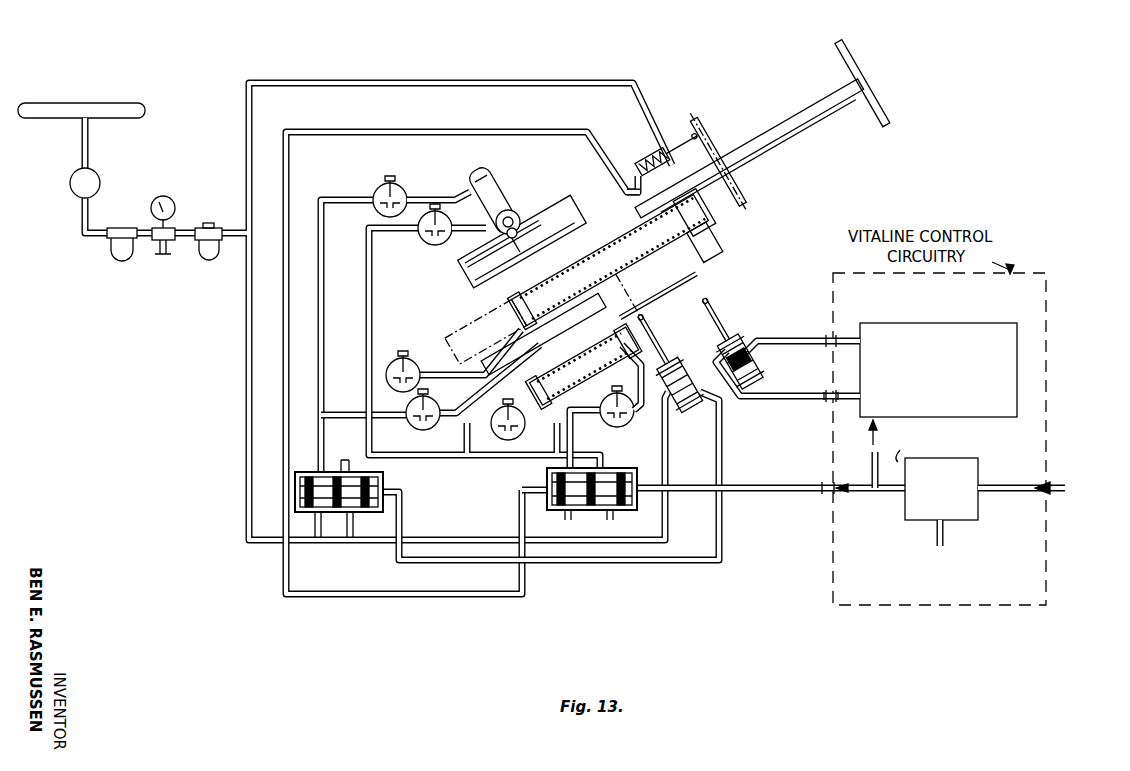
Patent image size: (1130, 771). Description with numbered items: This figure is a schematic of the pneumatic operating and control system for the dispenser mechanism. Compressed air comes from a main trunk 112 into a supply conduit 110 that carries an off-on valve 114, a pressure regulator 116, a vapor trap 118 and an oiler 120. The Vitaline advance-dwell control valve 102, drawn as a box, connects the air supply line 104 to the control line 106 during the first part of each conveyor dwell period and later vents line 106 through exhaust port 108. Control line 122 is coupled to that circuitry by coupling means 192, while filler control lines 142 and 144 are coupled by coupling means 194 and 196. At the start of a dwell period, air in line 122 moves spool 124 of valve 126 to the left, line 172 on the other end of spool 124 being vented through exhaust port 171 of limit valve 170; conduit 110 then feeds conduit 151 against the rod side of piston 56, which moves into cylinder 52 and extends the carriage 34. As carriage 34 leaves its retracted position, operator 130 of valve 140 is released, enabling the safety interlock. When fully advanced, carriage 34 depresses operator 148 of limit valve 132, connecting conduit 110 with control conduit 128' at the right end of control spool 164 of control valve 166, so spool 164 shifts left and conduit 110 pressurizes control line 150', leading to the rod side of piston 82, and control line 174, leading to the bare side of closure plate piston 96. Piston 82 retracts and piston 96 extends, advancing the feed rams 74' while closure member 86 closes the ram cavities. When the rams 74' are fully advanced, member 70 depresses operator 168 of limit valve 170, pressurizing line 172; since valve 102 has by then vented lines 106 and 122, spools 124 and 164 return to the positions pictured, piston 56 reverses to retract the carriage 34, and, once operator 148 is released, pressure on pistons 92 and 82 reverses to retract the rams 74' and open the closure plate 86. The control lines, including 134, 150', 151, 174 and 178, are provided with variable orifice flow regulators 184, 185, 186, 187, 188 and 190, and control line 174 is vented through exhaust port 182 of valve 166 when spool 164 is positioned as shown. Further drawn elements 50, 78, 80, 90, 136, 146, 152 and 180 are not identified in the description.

The carriage 34 is at (710, 276).
The cylinder 50 is at (560, 410).
The cylinder 52 is at (570, 348).
The piston 56 is at (680, 313).
The member 70 is at (862, 66).
The feed rams 74' is at (750, 150).
The workpiece (phantom) 78 is at (445, 316).
The cylinder 80 is at (570, 296).
The piston 82 is at (735, 200).
The closure member 86 is at (565, 210).
The cylinder 90 is at (508, 178).
The piston 92 is at (516, 200).
The closure plate piston 96 is at (495, 232).
The advance-dwell control valve 102 is at (962, 473).
The air supply line 104 is at (1040, 478).
The control line 106 is at (870, 462).
The exhaust port 108 is at (948, 538).
The supply conduit 110 is at (90, 143).
The main trunk 112 is at (30, 124).
The off-on valve 114 is at (100, 180).
The pressure regulator 116 is at (172, 216).
The vapor trap 118 is at (112, 246).
The oiler 120 is at (203, 250).
The control line 122 is at (742, 492).
The spool 124 is at (610, 466).
The valve 126 is at (535, 476).
The control conduit 128' is at (551, 491).
The operator 130 is at (740, 322).
The limit valve 132 is at (700, 418).
The control line 134 is at (480, 405).
The exhaust port 136 is at (566, 518).
The valve 140 is at (764, 360).
The filler control line 142 is at (800, 338).
The filler control line 144 is at (790, 408).
The valve body 146 is at (766, 376).
The operator 148 is at (672, 362).
The control line 150' is at (363, 433).
The conduit 151 is at (575, 455).
The exhaust port 152 is at (612, 518).
The control spool 164 is at (384, 476).
The control valve 166 is at (305, 468).
The operator 168 is at (682, 126).
The limit valve 170 is at (644, 152).
The exhaust port 171 is at (626, 192).
The control line 172 is at (430, 128).
The control line 174 is at (320, 300).
The control line 178 is at (440, 378).
The exhaust port 180 is at (350, 538).
The exhaust port 182 is at (316, 540).
The variable orifice flow regulator 184 is at (512, 440).
The variable orifice flow regulator 185 is at (423, 430).
The variable orifice flow regulator 186 is at (605, 402).
The variable orifice flow regulator 187 is at (400, 182).
The variable orifice flow regulator 188 is at (422, 243).
The variable orifice flow regulator 190 is at (415, 362).
The coupling means 192 is at (815, 500).
The coupling means 194 is at (838, 338).
The coupling means 196 is at (830, 402).